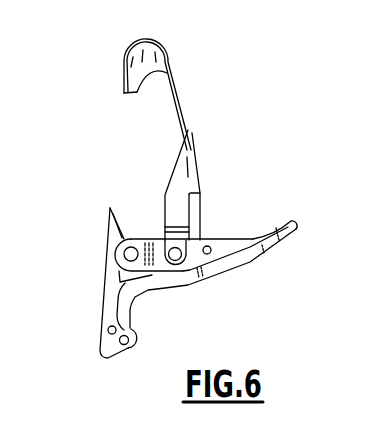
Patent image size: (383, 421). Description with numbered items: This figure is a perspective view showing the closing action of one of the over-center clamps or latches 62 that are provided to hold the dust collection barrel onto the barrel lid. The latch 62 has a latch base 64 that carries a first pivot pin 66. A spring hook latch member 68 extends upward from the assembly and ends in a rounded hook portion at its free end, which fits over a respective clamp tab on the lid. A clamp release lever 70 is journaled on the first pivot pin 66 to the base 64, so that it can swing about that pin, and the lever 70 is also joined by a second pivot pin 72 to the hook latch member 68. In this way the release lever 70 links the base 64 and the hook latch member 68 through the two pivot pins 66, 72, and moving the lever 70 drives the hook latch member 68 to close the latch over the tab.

The over-center clamp 62 is at (290, 136).
The latch base 64 is at (108, 283).
The first pivot pin 66 is at (132, 247).
The spring hook latch member 68 is at (188, 100).
The clamp release lever 70 is at (245, 271).
The second pivot pin 72 is at (176, 261).